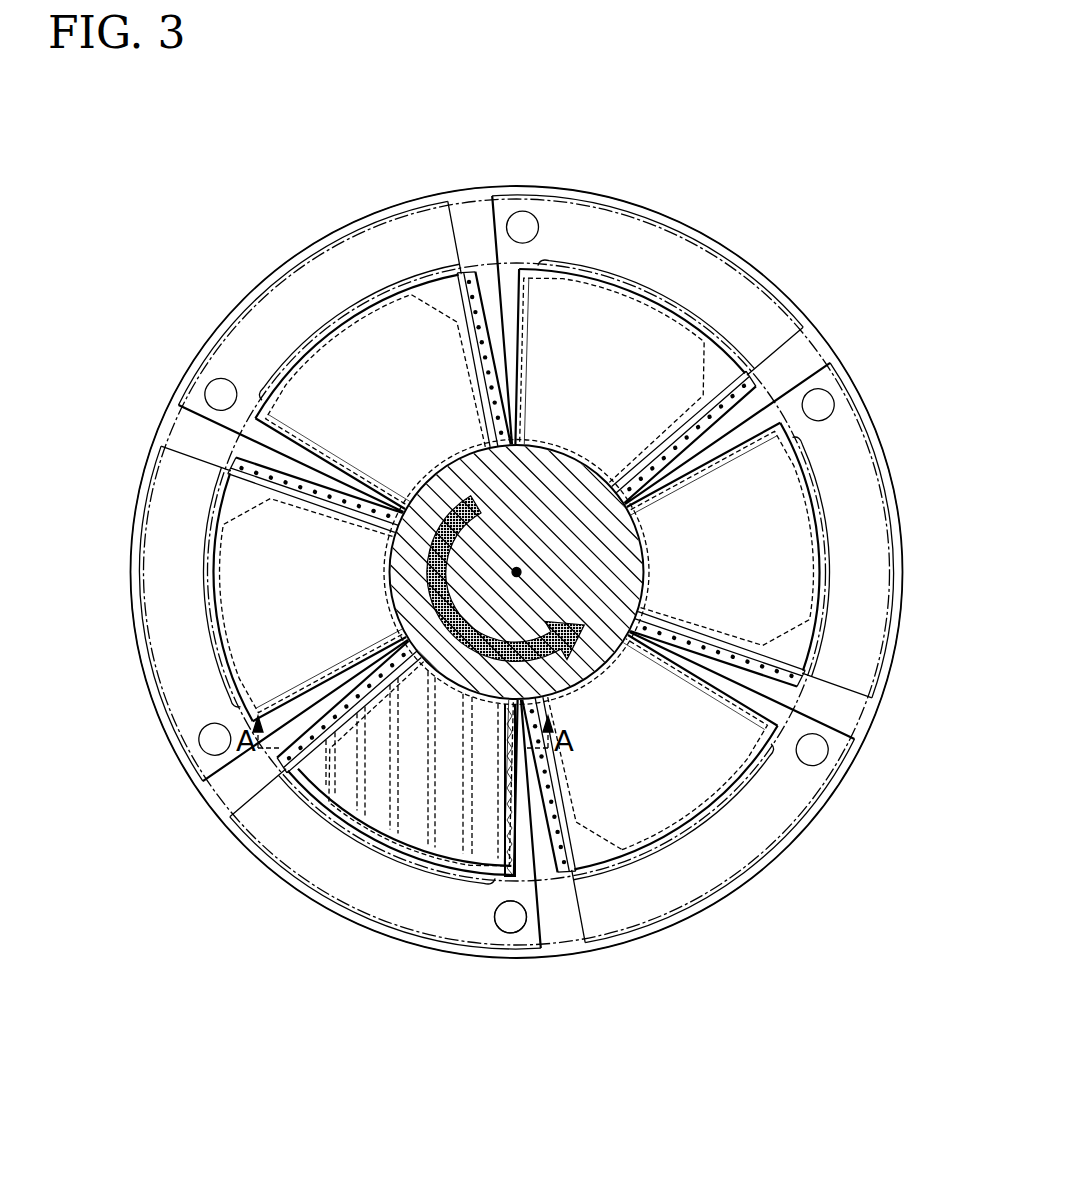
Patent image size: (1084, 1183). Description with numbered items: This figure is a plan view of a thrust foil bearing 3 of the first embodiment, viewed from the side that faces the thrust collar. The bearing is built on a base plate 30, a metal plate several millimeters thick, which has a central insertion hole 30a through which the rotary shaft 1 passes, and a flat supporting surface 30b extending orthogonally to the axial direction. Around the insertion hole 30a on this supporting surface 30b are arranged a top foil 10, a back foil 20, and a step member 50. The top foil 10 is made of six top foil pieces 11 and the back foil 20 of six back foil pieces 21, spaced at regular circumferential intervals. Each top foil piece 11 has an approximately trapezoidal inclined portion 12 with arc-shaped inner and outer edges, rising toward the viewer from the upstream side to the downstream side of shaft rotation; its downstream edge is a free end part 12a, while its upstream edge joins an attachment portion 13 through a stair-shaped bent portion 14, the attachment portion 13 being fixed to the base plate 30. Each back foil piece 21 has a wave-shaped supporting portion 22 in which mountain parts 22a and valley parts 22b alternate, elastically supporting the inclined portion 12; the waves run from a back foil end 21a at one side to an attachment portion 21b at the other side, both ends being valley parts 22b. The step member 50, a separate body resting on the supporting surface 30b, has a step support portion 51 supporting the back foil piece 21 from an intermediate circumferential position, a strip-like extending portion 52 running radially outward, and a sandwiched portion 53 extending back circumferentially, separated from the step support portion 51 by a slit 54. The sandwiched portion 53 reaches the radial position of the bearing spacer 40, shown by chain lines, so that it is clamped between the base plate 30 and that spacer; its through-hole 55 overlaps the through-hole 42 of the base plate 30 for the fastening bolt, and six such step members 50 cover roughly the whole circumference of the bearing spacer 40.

The rotary shaft 1 is at (445, 487).
The thrust foil bearing 3 is at (598, 195).
The top foil 10 is at (376, 920).
The top foil piece 11 is at (330, 763).
The inclined portion 12 is at (518, 892).
The end part 12a is at (508, 837).
The attachment portion 13 is at (300, 737).
The bent portion 14 is at (312, 777).
The back foil 20 is at (376, 896).
The back foil piece 21 is at (376, 896).
The back foil end 21a is at (305, 780).
The attachment portion 21b is at (560, 823).
The supporting portion 22 is at (325, 864).
The mountain part 22a is at (317, 780).
The valley part 22b is at (370, 780).
The base plate 30 is at (488, 191).
The insertion hole 30a is at (632, 640).
The supporting surface 30b is at (773, 700).
The bearing spacer 40 is at (702, 918).
The through-hole 42 is at (511, 917).
The step member 50 is at (527, 797).
The step support portion 51 is at (553, 830).
The extending portion 52 is at (507, 887).
The sandwiched portion 53 is at (298, 877).
The slit 54 is at (406, 843).
The through-hole 55 is at (509, 918).